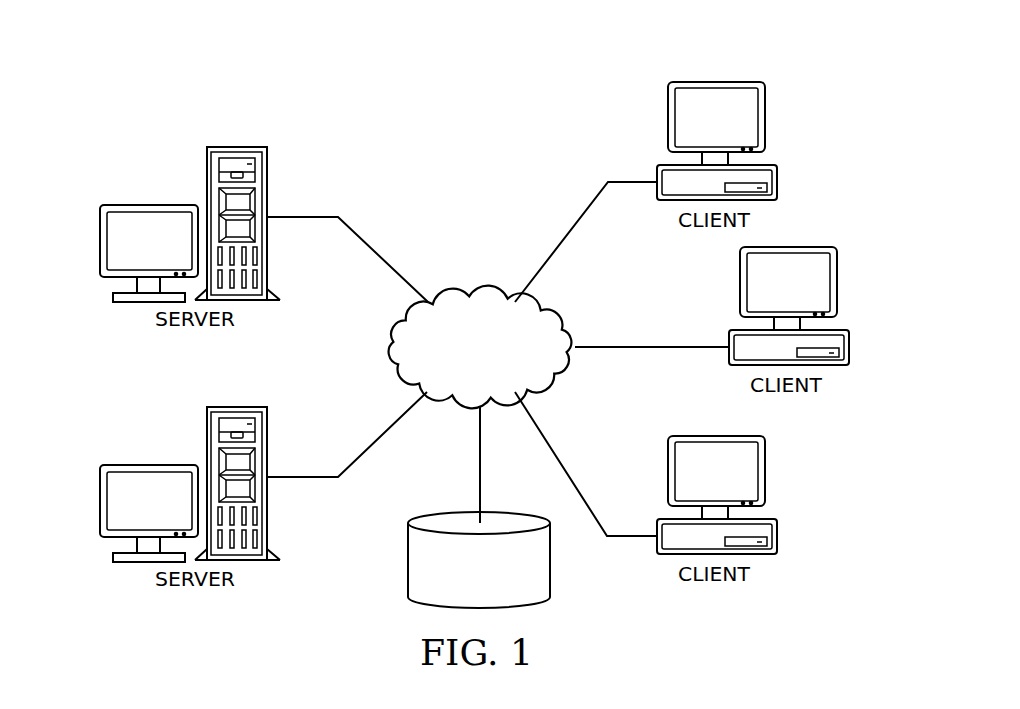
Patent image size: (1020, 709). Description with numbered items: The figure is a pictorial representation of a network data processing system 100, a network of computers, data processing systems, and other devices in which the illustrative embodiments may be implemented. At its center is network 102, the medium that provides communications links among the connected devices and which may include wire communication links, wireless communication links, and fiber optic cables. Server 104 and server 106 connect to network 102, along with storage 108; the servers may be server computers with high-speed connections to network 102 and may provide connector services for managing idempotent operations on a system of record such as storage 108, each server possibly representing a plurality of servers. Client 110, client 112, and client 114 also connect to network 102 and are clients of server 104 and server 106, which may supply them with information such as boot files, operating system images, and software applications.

The network data processing system 100 is at (347, 71).
The network 102 is at (455, 295).
The server 104 is at (100, 243).
The server 106 is at (100, 500).
The storage 108 is at (408, 558).
The client 110 is at (777, 173).
The client 112 is at (847, 355).
The client 114 is at (775, 545).